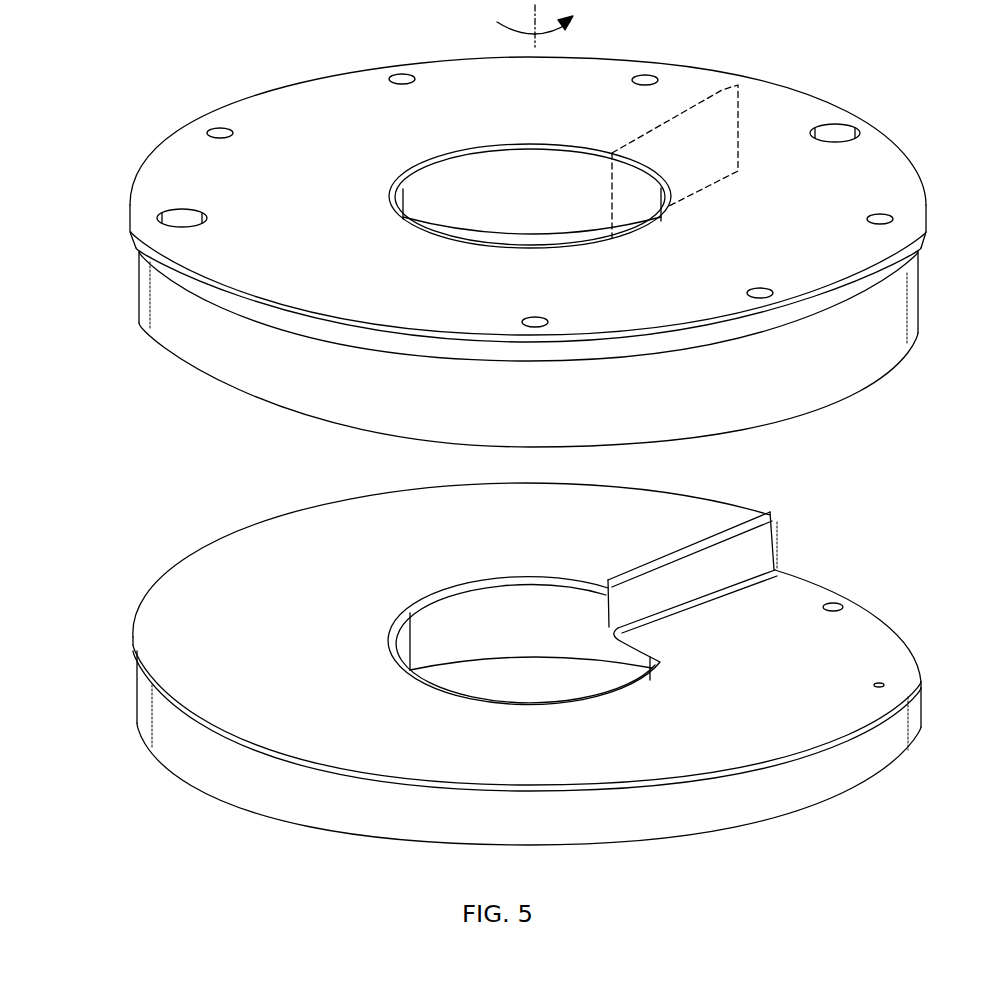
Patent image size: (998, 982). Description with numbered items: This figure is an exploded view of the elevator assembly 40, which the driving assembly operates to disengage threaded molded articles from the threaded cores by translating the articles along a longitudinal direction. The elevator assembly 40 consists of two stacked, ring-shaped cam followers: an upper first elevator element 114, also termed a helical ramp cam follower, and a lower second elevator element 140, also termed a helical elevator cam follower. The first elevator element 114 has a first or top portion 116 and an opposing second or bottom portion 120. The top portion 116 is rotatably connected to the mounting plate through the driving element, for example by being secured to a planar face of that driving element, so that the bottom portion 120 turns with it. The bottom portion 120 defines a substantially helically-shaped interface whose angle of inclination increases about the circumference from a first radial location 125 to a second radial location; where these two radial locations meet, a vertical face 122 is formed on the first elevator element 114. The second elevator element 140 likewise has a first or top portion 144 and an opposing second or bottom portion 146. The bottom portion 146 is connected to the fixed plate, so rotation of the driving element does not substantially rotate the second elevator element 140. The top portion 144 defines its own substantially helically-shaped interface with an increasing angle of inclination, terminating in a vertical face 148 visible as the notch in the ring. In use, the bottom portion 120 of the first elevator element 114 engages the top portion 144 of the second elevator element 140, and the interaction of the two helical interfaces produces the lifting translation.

The elevator assembly 40 is at (931, 73).
The first elevator element 114 is at (283, 110).
The first or top portion 116 is at (130, 212).
The second or bottom portion 120 is at (177, 343).
The vertical face 122 is at (722, 87).
The first radial location 125 is at (713, 135).
The second elevator element 140 is at (130, 665).
The first or top portion 144 is at (315, 727).
The second or bottom portion 146 is at (700, 835).
The vertical face 148 is at (762, 540).